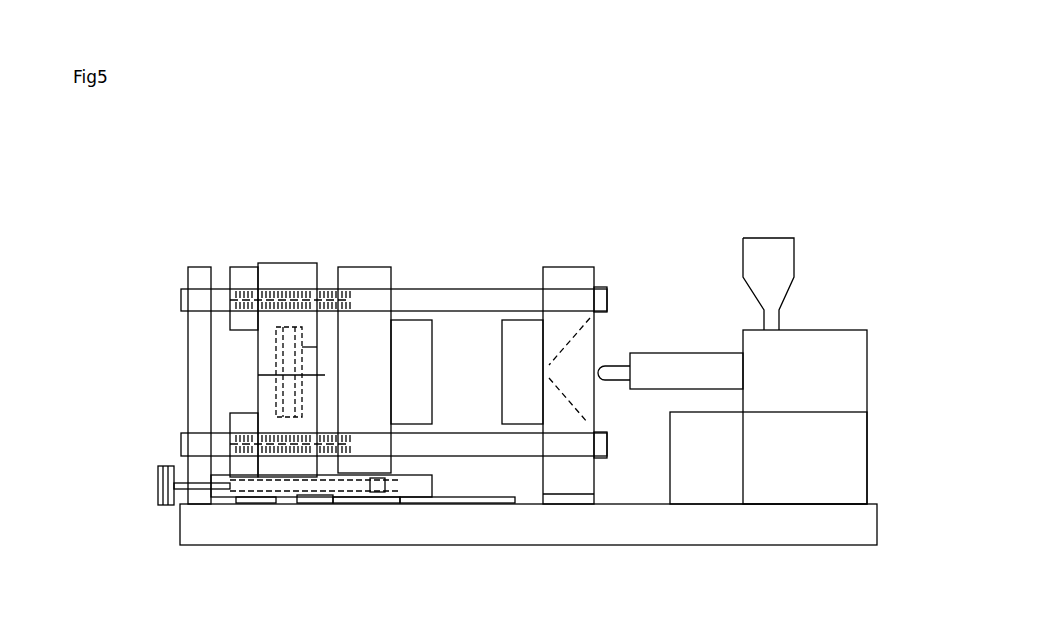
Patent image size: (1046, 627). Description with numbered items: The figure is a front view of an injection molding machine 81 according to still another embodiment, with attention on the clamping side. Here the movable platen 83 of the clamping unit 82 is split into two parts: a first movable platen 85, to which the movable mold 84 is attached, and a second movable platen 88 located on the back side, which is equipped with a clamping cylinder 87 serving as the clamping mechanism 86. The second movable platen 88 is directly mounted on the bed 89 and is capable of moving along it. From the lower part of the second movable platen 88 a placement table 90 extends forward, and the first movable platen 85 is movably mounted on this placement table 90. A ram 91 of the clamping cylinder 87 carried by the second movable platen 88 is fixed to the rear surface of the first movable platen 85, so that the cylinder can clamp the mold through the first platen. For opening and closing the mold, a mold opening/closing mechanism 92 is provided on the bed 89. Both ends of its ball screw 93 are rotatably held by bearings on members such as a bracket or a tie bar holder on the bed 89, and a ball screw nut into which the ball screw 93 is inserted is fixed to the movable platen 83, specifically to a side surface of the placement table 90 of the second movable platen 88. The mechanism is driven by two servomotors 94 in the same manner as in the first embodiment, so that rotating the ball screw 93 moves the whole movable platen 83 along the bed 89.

The injection molding machine 81 is at (629, 227).
The clamping unit 82 is at (394, 335).
The movable platen 83 is at (338, 252).
The movable mold 84 is at (424, 381).
The first movable platen 85 is at (365, 267).
The clamping mechanism 86 is at (220, 352).
The clamping cylinder 87 is at (300, 368).
The second movable platen 88 is at (282, 267).
The bed 89 is at (853, 527).
The placement table 90 is at (400, 473).
The ram 91 is at (325, 375).
The mold opening/closing mechanism 92 is at (292, 516).
The ball screw 93 is at (262, 501).
The servomotors 94 is at (232, 503).